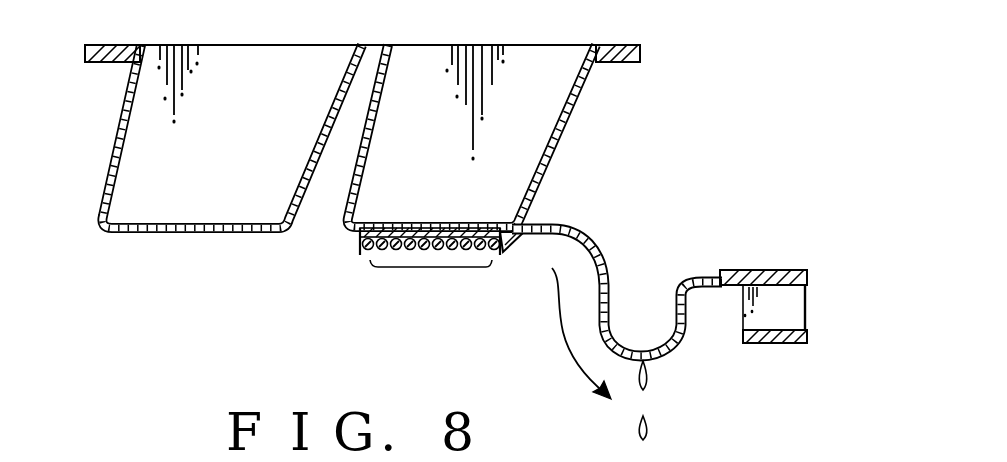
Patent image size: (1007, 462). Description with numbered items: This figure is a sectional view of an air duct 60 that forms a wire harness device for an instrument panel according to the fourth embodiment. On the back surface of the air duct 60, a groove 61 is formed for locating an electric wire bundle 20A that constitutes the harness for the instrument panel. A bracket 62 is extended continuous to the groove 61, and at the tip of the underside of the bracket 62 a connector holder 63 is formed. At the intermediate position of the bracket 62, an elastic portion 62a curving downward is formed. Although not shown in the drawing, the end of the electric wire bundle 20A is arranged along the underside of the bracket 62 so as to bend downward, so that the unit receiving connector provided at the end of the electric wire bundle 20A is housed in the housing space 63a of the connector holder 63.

The air duct 60 is at (573, 142).
The groove 61 is at (369, 254).
The electric wire bundle 20A is at (432, 267).
The bracket 62 is at (606, 288).
The elastic portion 62a is at (656, 363).
The connector holder 63 is at (778, 345).
The housing space 63a is at (792, 307).